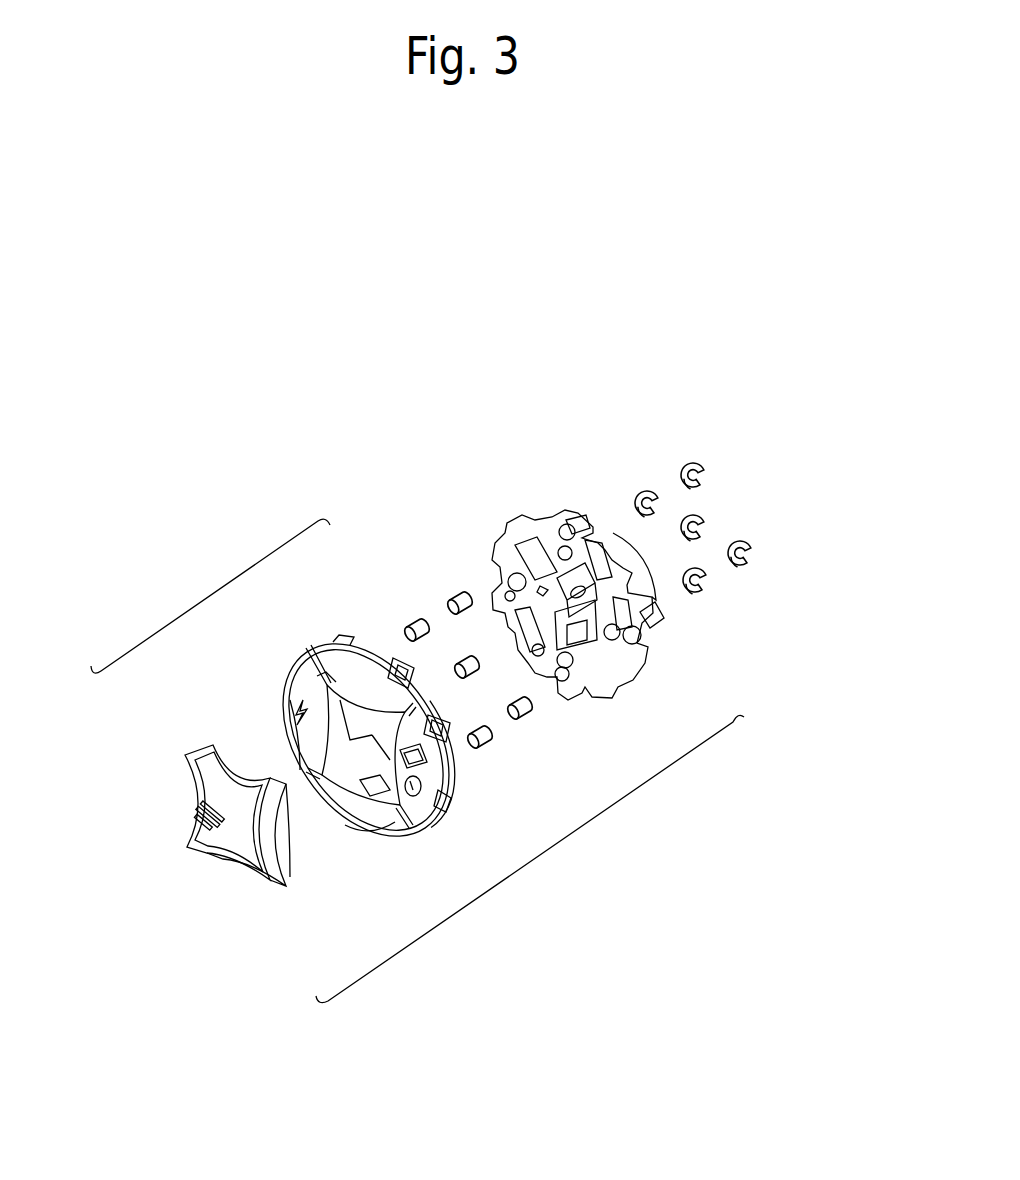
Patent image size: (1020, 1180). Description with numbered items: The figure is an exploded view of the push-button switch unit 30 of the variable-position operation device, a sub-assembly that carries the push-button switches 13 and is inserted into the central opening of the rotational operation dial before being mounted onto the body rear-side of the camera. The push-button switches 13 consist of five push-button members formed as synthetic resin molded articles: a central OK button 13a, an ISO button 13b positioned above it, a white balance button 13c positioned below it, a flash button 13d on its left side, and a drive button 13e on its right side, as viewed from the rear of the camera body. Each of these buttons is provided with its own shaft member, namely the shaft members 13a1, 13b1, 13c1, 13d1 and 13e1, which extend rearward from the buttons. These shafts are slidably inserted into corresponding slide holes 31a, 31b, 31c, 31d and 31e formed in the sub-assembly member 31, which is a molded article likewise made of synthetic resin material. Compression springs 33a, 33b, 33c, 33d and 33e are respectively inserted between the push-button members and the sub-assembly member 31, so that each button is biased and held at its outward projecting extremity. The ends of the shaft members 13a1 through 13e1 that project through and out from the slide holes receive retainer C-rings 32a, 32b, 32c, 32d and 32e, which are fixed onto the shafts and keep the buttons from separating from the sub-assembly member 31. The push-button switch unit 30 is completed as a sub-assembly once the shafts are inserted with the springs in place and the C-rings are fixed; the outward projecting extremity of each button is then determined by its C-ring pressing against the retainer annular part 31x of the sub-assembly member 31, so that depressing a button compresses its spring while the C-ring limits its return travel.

The push-button switches 13 is at (212, 593).
The central OK button 13a is at (202, 812).
The shaft member 13a1 is at (282, 838).
The ISO button 13b is at (345, 660).
The shaft member 13b1 is at (372, 645).
The white balance button 13c is at (337, 803).
The shaft member 13c1 is at (388, 800).
The flash button 13d is at (290, 680).
The shaft member 13d1 is at (312, 652).
The drive button 13e is at (428, 817).
The shaft member 13e1 is at (450, 770).
The push-button switch unit 30 is at (539, 861).
The sub-assembly member 31 is at (592, 508).
The slide hole 31a is at (533, 652).
The slide hole 31b is at (540, 530).
The slide hole 31c is at (550, 670).
The slide hole 31d is at (500, 592).
The slide hole 31e is at (610, 697).
The retainer annular part 31x is at (572, 512).
The retainer C-ring 32a is at (705, 518).
The retainer C-ring 32b is at (682, 466).
The retainer C-ring 32c is at (696, 595).
The retainer C-ring 32d is at (638, 493).
The retainer C-ring 32e is at (738, 568).
The compression spring 33a is at (473, 676).
The compression spring 33b is at (455, 600).
The compression spring 33c is at (488, 744).
The compression spring 33d is at (416, 621).
The compression spring 33e is at (525, 718).